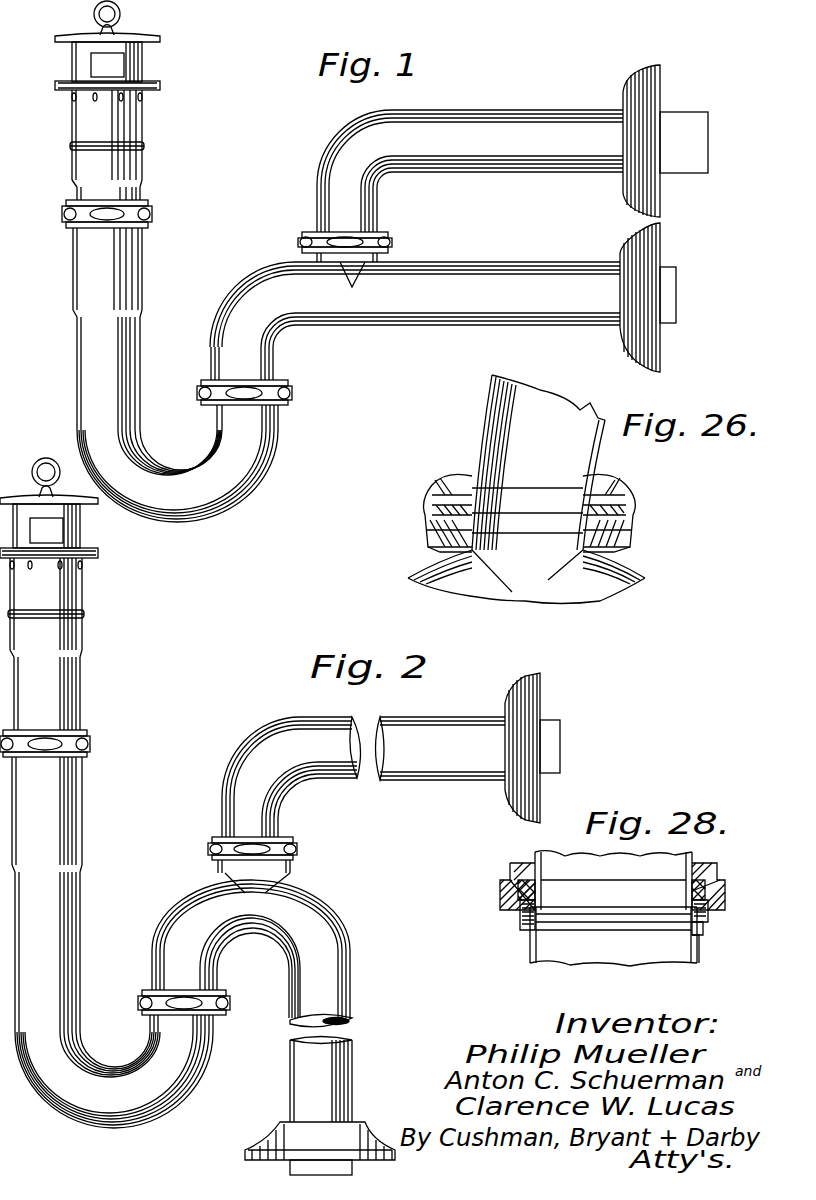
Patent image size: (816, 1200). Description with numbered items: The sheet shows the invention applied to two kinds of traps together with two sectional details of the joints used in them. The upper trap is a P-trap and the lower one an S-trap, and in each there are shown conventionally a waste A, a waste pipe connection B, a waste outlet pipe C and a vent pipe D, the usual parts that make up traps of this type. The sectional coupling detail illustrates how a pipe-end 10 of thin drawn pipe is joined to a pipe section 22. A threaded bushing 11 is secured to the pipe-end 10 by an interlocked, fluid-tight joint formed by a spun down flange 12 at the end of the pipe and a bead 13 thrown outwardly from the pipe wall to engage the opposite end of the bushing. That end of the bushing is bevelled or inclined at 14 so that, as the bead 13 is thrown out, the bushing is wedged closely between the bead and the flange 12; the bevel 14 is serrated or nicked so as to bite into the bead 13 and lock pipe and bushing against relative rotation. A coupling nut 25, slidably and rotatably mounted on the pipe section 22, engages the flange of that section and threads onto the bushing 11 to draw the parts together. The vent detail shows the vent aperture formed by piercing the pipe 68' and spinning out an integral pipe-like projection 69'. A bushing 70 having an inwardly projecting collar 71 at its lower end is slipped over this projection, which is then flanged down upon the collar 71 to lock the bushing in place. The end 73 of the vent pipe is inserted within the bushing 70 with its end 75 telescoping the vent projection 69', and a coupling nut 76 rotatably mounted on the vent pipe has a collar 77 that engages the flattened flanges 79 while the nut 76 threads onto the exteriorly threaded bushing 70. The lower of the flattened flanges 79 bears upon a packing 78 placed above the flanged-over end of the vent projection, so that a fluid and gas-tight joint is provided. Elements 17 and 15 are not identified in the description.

In FIG. 1, the waste A is at (94, 114).
In FIG. 2, the waste A is at (75, 642).
In FIG. 1, the waste pipe connection B is at (164, 375).
In FIG. 2, the waste pipe connection B is at (78, 836).
In FIG. 1, the waste outlet pipe C is at (478, 322).
In FIG. 2, the waste outlet pipe C is at (336, 909).
In FIG. 1, the vent pipe D is at (503, 176).
In FIG. 2, the vent pipe D is at (298, 708).
In FIG. 26, the end of the vent pipe 73 is at (578, 458).
In FIG. 26, the collar 77 is at (455, 486).
In FIG. 26, the packing 78 is at (433, 526).
In FIG. 26, the collar 71 is at (443, 553).
In FIG. 26, the flattened flanges 79 is at (622, 501).
In FIG. 26, the coupling nut 76 is at (626, 525).
In FIG. 26, the bushing 70 is at (617, 539).
In FIG. 26, the pipe 68' is at (547, 576).
In FIG. 26, the pipe-like projection 69' is at (584, 599).
In FIG. 26, the end of the vent pipe 75 is at (548, 532).
In FIG. 28, the pipe section 22 is at (675, 858).
In FIG. 28, the coupling nut 25 is at (708, 871).
In FIG. 28, the packing 17 is at (537, 906).
In FIG. 28, the spun down flange 12 is at (690, 899).
In FIG. 28, the pipe-end 10 is at (572, 953).
In FIG. 28, the bevel 14 is at (532, 933).
In FIG. 28, the compression ring 15 is at (700, 918).
In FIG. 28, the bushing 11 is at (700, 930).
In FIG. 28, the bead 13 is at (698, 937).